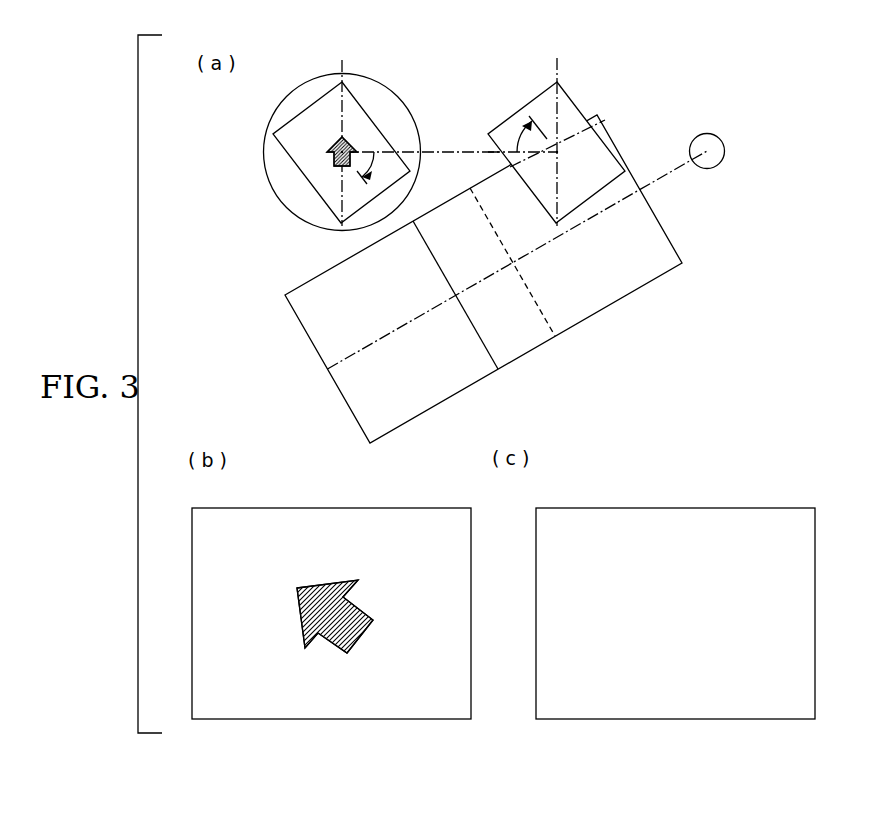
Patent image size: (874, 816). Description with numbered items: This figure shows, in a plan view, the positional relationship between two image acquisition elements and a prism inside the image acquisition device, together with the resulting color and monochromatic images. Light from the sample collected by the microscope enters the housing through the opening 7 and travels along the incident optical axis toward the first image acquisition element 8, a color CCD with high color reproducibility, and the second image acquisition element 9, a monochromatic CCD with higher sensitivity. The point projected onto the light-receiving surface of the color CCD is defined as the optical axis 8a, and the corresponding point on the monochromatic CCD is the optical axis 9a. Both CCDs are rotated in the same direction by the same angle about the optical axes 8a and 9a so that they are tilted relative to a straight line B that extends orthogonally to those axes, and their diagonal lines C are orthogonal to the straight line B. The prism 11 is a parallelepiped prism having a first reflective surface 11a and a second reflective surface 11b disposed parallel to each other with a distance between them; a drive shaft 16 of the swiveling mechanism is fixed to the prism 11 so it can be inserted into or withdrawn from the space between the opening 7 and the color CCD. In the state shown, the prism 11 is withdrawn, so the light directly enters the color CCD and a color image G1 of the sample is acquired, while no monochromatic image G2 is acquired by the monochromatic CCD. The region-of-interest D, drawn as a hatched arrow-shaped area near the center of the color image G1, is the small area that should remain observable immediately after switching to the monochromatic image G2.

The opening 7 is at (288, 102).
The first image acquisition element 8 is at (357, 102).
The optical axis 8a is at (356, 136).
The second image acquisition element 9 is at (567, 96).
The optical axis 9a is at (574, 147).
The prism 11 is at (535, 348).
The first reflective surface 11a is at (423, 397).
The second reflective surface 11b is at (603, 288).
The drive shaft 16 is at (707, 169).
The straight line B is at (455, 150).
The diagonal line C is at (442, 130).
The region-of-interest D is at (327, 148).
The color image G1 is at (272, 508).
The monochromatic image G2 is at (673, 506).